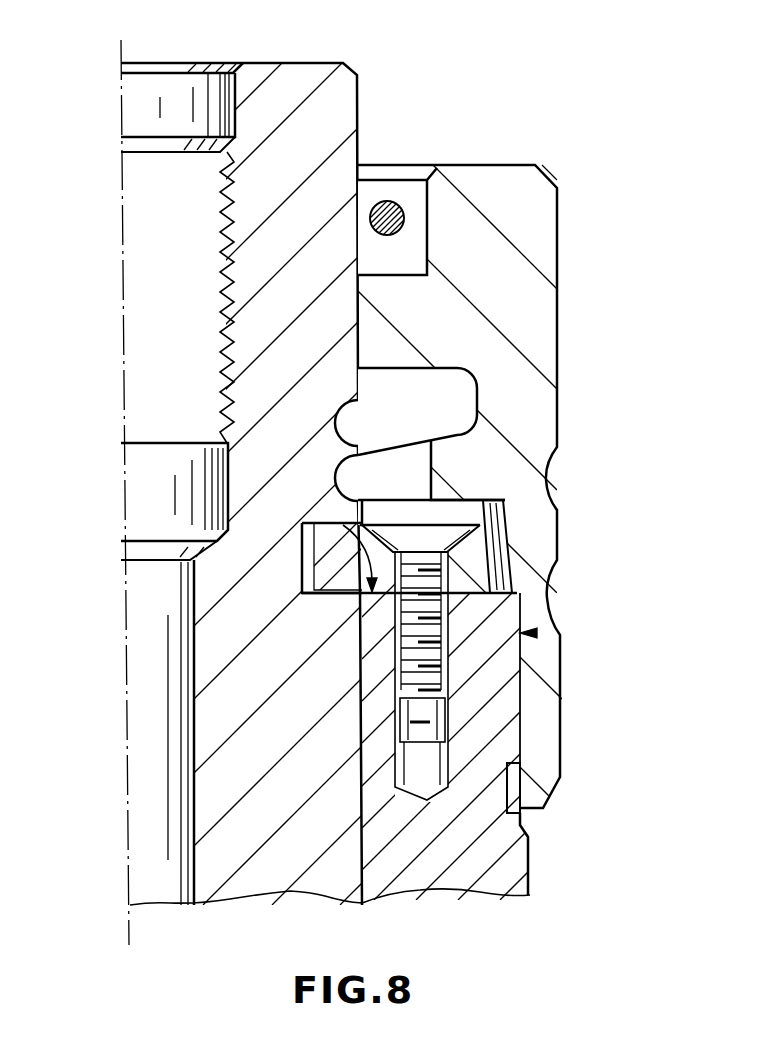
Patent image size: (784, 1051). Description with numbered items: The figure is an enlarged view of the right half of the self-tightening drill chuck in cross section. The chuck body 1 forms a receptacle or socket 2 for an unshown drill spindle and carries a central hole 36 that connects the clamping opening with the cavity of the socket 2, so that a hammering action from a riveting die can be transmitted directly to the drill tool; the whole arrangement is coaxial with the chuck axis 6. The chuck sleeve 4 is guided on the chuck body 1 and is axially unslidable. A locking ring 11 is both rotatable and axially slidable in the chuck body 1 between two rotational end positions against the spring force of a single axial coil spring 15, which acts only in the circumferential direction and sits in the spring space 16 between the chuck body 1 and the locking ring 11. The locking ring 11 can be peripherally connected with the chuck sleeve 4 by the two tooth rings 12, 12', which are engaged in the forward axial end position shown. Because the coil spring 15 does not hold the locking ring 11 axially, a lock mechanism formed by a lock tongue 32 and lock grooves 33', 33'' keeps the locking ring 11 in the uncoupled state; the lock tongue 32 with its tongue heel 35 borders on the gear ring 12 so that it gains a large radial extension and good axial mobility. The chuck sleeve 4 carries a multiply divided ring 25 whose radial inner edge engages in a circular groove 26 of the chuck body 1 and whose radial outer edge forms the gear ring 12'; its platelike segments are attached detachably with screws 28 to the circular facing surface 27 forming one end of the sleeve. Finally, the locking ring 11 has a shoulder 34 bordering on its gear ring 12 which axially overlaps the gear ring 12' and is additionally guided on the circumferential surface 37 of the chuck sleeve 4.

The chuck body 1 is at (325, 100).
The receptacle or socket 2 is at (180, 168).
The chuck sleeve 4 is at (423, 854).
The chuck axis 6 is at (121, 50).
The locking ring 11 is at (490, 373).
The tooth ring 12 is at (488, 516).
The tooth ring 12' is at (553, 546).
The axial coil spring 15 is at (405, 198).
The spring space 16 is at (392, 192).
The multiply divided ring 25 is at (333, 533).
The circular groove 26 is at (303, 583).
The circular facing surface 27 is at (358, 524).
The screw 28 is at (412, 678).
The lock tongue 32 is at (357, 482).
The lock groove 33' is at (197, 394).
The lock groove 33'' is at (197, 439).
The shoulder 34 is at (533, 668).
The tongue heel 35 is at (450, 465).
The central hole 36 is at (165, 607).
The circumferential surface 37 is at (537, 633).